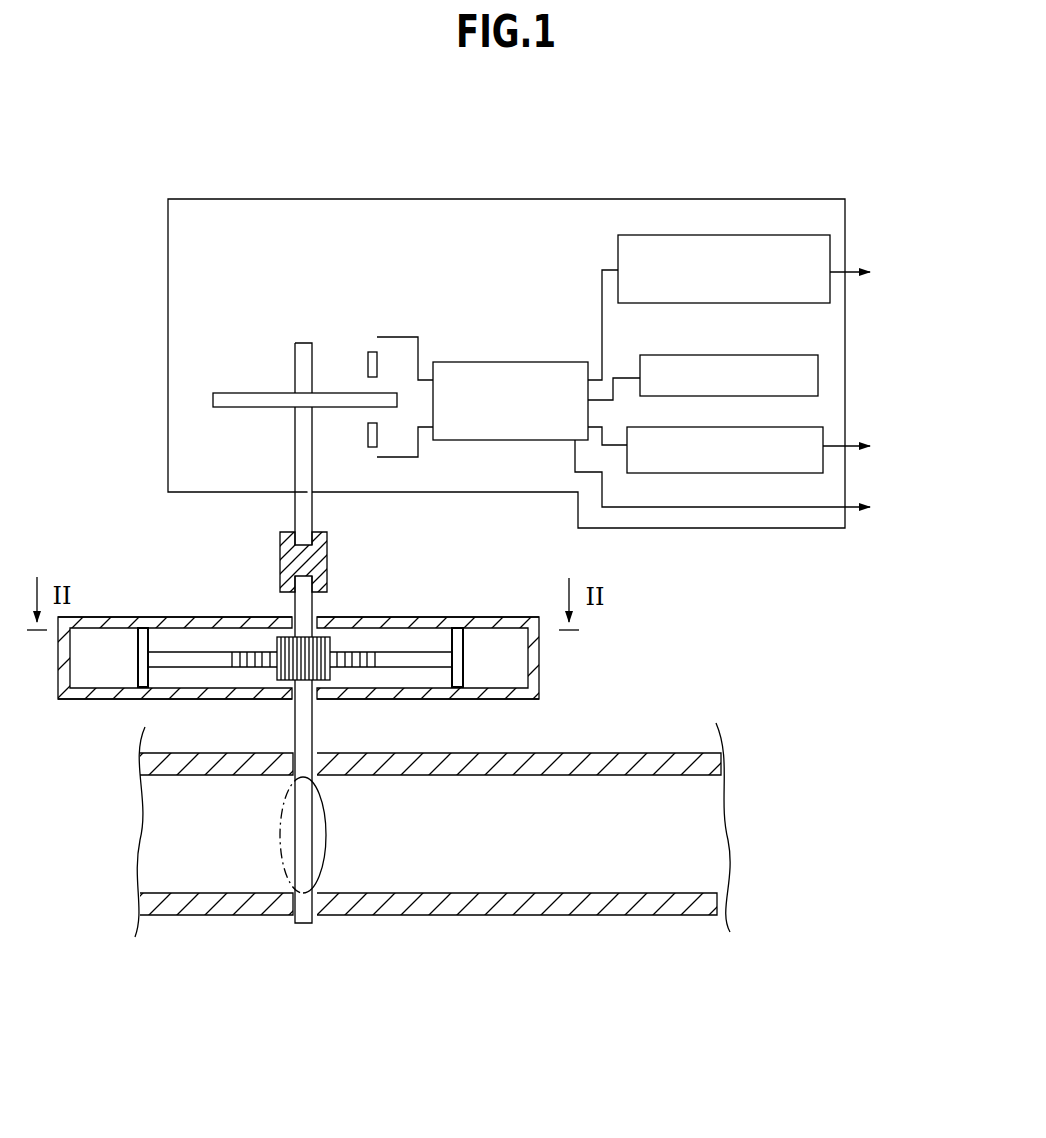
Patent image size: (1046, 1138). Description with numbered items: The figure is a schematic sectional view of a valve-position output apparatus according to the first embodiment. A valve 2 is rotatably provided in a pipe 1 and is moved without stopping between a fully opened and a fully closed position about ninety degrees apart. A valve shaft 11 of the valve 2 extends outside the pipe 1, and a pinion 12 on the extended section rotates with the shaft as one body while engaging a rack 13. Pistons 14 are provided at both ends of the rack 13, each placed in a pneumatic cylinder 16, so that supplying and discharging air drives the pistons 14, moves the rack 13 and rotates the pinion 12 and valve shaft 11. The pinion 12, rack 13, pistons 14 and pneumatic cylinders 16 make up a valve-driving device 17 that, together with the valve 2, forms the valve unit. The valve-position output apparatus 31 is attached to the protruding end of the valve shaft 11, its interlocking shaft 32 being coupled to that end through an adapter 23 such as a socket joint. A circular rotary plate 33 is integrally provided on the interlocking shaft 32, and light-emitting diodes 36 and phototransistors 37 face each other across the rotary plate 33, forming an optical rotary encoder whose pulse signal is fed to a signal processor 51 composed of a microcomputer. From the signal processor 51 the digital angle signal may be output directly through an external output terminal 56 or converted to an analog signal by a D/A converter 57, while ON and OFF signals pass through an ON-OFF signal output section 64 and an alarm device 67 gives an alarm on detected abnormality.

The pipe 1 is at (527, 905).
The valve 2 is at (305, 835).
The valve shaft 11 is at (307, 720).
The pinion 12 is at (323, 637).
The rack 13 is at (253, 665).
The pistons 14 is at (147, 642).
The pneumatic cylinder 16 is at (97, 690).
The valve-driving device 17 is at (225, 618).
The adapter 23 is at (332, 548).
The valve-position output apparatus 31 is at (218, 207).
The interlocking shaft 32 is at (300, 438).
The rotary plate 33 is at (238, 393).
The light-emitting diodes 36 is at (367, 367).
The phototransistors 37 is at (367, 428).
The signal processor 51 is at (460, 362).
The external output terminal 56 is at (830, 508).
The D/A converter 57 is at (640, 427).
The ON-OFF signal output section 64 is at (641, 235).
The alarm device 67 is at (660, 355).